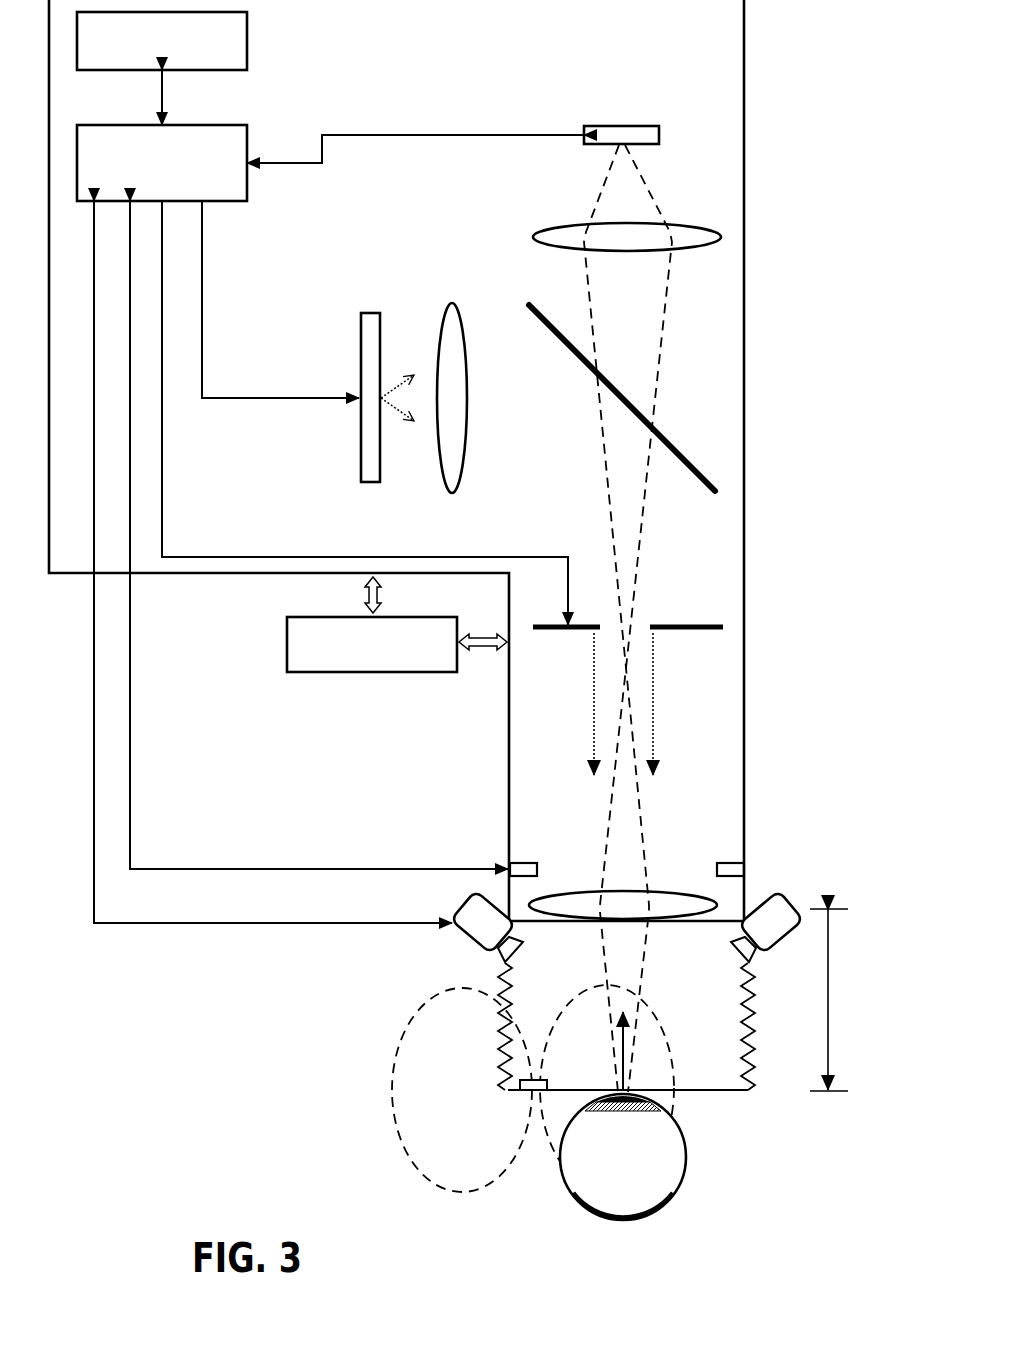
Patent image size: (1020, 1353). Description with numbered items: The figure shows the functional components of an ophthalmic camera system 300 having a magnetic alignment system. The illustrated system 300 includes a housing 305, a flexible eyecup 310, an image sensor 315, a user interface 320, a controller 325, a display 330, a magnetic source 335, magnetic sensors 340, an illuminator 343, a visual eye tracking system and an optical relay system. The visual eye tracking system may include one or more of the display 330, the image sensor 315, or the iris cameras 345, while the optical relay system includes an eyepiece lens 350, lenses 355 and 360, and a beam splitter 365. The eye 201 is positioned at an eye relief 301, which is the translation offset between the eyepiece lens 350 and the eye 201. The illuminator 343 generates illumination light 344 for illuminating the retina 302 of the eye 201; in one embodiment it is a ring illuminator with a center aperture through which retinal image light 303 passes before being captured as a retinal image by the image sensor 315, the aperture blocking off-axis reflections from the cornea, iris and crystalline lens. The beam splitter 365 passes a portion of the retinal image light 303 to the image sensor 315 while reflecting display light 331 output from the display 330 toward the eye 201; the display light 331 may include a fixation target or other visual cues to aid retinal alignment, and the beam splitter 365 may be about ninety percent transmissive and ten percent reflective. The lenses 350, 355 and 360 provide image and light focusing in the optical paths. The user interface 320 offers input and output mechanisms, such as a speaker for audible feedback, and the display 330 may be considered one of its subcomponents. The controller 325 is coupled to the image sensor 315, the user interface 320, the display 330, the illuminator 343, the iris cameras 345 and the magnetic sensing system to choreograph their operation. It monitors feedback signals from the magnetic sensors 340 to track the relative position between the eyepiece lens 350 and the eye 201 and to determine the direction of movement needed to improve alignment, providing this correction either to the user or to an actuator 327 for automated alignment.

The ophthalmic camera system 300 is at (213, 1070).
The eye relief 301 is at (830, 967).
The retina 302 is at (635, 1222).
The retinal image light 303 is at (640, 528).
The housing 305 is at (744, 130).
The flexible eyecup 310 is at (729, 1080).
The image sensor 315 is at (623, 126).
The user interface 320 is at (222, 54).
The controller 325 is at (177, 190).
The actuator 327 is at (445, 655).
The display 330 is at (362, 360).
The display light 331 is at (397, 413).
The magnetic source 335 is at (523, 1092).
The magnetic sensors 340 is at (517, 868).
The illuminator 343 is at (700, 629).
The illumination light 344 is at (655, 733).
The iris cameras 345 is at (497, 933).
The eyepiece lens 350 is at (637, 915).
The lens 355 is at (722, 235).
The lens 360 is at (452, 303).
The beam splitter 365 is at (713, 483).
The eye 201 is at (637, 1170).